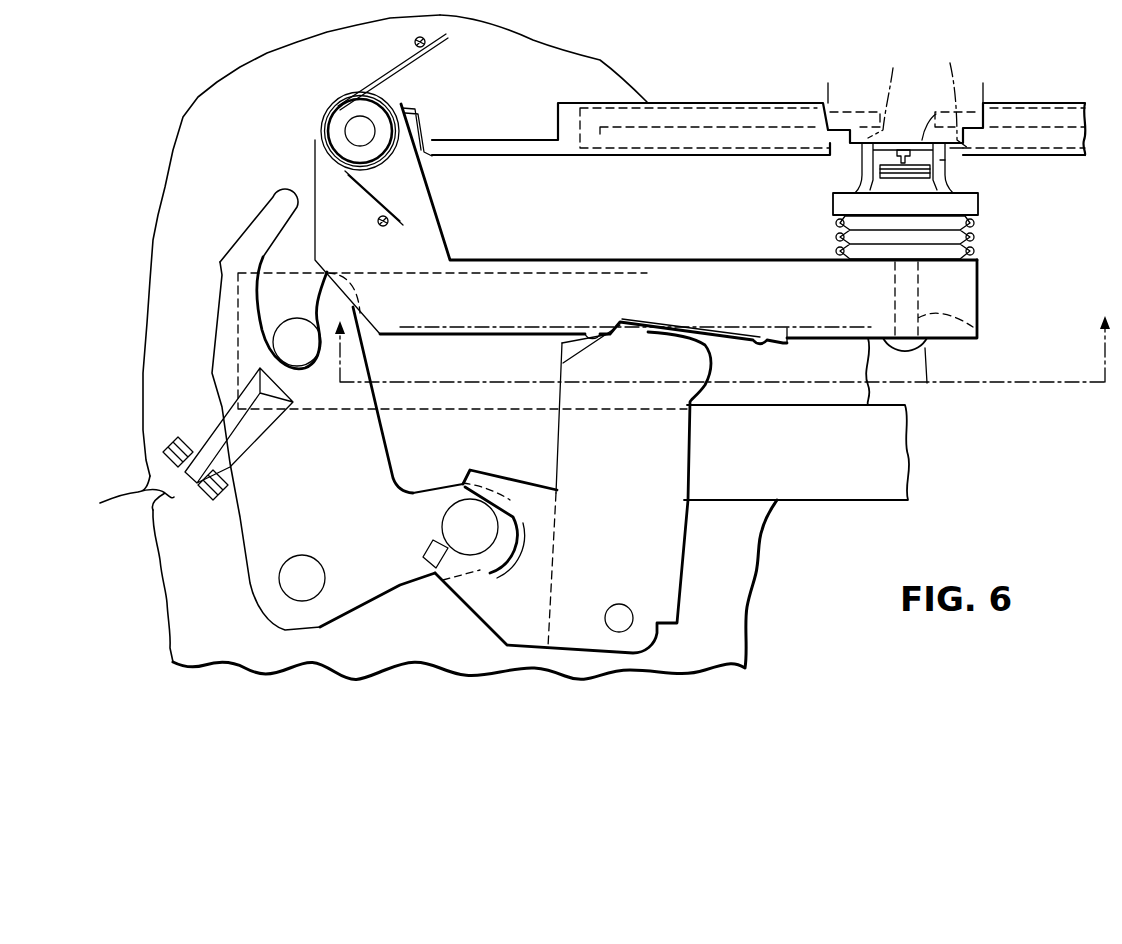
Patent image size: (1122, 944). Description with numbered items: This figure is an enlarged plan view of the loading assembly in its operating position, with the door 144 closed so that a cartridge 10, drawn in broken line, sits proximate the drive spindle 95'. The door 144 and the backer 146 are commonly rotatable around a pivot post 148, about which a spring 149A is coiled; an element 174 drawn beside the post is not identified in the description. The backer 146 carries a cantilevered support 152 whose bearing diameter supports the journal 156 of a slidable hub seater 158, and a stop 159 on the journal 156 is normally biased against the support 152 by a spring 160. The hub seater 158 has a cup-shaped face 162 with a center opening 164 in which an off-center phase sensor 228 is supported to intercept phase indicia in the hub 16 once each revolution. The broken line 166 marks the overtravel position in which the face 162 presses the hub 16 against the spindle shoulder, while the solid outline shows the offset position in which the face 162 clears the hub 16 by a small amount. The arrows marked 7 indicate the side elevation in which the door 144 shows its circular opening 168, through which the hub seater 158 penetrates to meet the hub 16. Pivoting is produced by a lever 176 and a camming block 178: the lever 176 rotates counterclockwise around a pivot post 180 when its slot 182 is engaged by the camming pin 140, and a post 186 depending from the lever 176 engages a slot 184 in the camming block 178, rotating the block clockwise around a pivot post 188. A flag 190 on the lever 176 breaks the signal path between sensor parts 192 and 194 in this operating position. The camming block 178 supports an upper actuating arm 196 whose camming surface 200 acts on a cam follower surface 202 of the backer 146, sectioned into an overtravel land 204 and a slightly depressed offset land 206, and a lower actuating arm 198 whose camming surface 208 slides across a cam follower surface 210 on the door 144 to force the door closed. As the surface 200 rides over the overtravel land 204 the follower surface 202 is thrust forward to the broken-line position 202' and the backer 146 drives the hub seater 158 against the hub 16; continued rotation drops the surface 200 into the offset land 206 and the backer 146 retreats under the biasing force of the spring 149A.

The section line 7- 7 is at (724, 338).
The cartridge 10 is at (683, 100).
The hub 16 is at (945, 94).
The drive spindle 95' is at (891, 91).
The camming pin 140 is at (297, 320).
The door 144 is at (682, 158).
The backer 146 is at (440, 320).
The pivot post 148 is at (358, 128).
The spring 149A is at (322, 152).
The cantilevered support 152 is at (950, 332).
The journal 156 is at (977, 327).
The hub seater 158 is at (838, 198).
The stop 159 is at (938, 378).
The spring 160 is at (975, 240).
The cup-shaped face 162 is at (948, 170).
The center opening 164 is at (870, 160).
The broken line position 166 is at (947, 168).
The circular opening 168 is at (960, 150).
The torsion spring and plate 174 is at (503, 139).
The lever 176 is at (252, 520).
The camming block 178 is at (690, 495).
The pivot post 180 is at (302, 556).
The slot 182 is at (270, 245).
The slot 184 is at (442, 552).
The post 186 is at (448, 522).
The pivot post 188 is at (640, 612).
The flag 190 is at (160, 482).
The sensor part 192 is at (202, 497).
The sensor part 194 is at (178, 437).
The upper actuating arm 196 is at (672, 480).
The lower actuating arm 198 is at (563, 362).
The camming surface 200 is at (650, 338).
The cam follower surface 202 is at (501, 351).
The cam follower surface position 202' is at (781, 306).
The overtravel land 204 is at (589, 332).
The offset land 206 is at (712, 328).
The camming surface 208 is at (567, 339).
The cam follower surface 210 is at (516, 327).
The phase sensor 228 is at (885, 155).